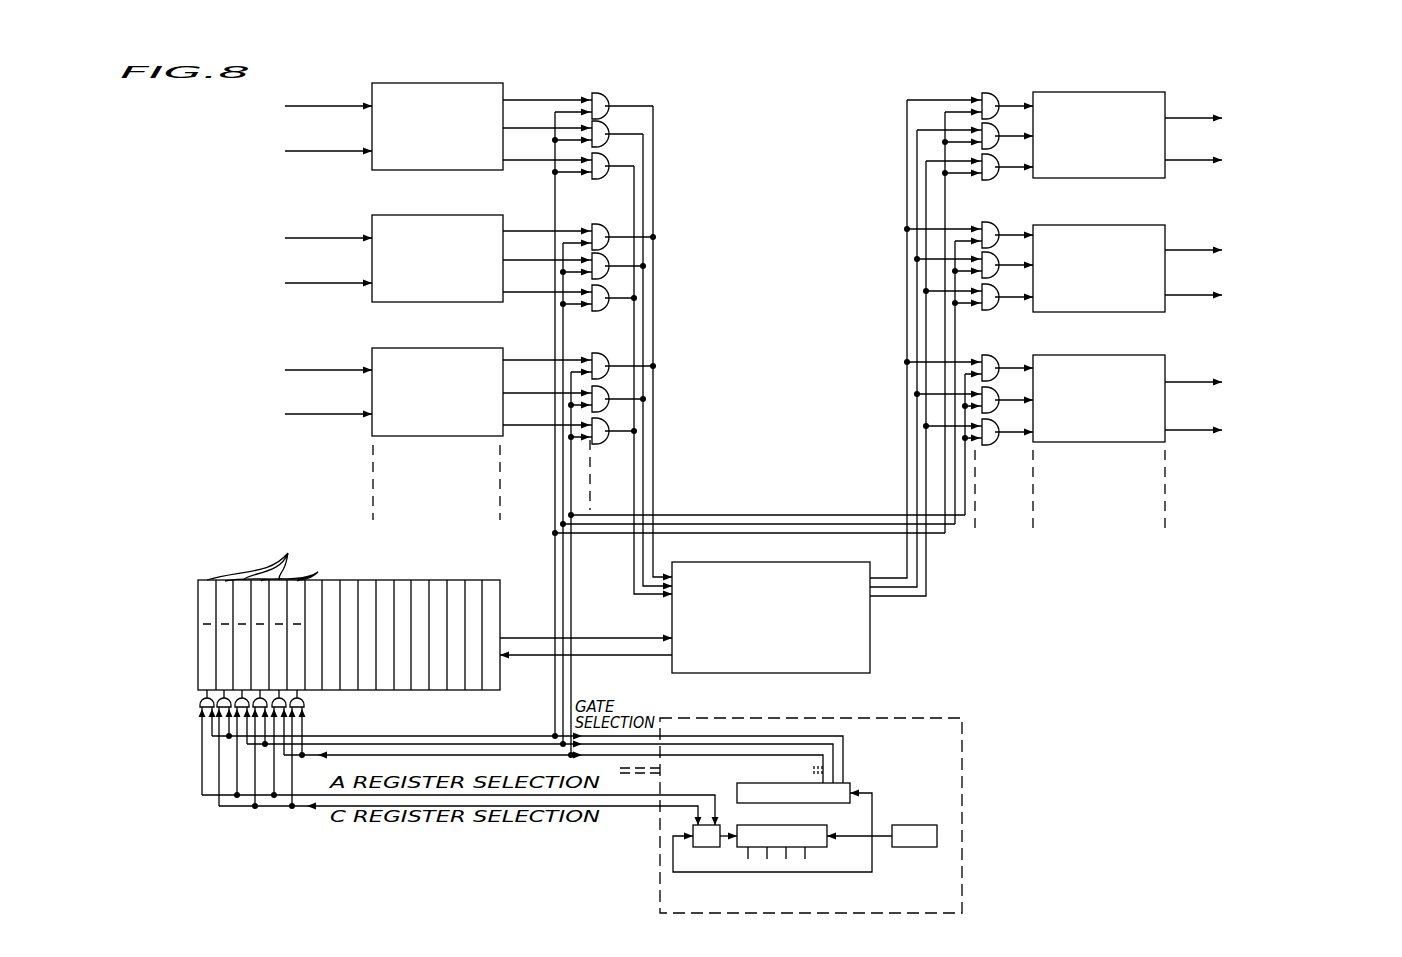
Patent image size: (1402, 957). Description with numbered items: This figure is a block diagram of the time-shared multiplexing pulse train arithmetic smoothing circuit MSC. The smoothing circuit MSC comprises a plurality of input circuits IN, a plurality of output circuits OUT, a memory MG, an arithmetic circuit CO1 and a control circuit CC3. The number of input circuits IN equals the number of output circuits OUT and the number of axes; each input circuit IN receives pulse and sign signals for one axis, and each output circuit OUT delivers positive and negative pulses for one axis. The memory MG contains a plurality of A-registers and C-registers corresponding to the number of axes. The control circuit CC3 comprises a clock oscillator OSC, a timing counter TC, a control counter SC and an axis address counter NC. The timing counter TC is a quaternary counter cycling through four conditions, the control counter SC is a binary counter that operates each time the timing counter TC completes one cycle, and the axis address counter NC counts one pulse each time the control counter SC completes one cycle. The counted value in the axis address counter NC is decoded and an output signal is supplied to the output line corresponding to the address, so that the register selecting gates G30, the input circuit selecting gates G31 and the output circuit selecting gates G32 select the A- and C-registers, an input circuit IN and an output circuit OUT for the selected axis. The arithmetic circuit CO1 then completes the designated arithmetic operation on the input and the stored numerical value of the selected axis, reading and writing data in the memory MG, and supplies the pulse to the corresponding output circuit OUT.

The input circuits IN is at (355, 280).
The input circuit selecting gates G31 is at (608, 398).
The output circuit selecting gates G32 is at (948, 318).
The output circuits OUT is at (1215, 288).
The arithmetic circuit CO1 is at (870, 618).
The memory MG is at (218, 653).
The register selecting gates G30 is at (372, 749).
The time-shared multiplexing pulse train arithmetic smoothing circuit MSC is at (1170, 742).
The control circuit CC3 is at (952, 892).
The axis address counter NC is at (947, 712).
The control counter SC is at (673, 833).
The timing counter TC is at (745, 848).
The clock oscillator OSC is at (937, 838).